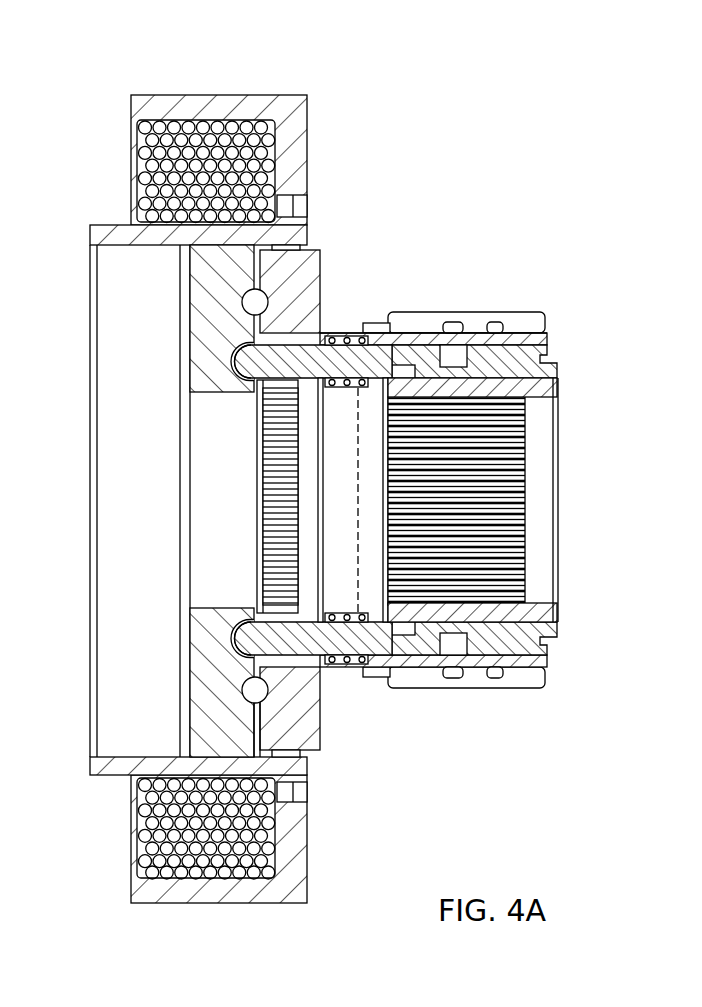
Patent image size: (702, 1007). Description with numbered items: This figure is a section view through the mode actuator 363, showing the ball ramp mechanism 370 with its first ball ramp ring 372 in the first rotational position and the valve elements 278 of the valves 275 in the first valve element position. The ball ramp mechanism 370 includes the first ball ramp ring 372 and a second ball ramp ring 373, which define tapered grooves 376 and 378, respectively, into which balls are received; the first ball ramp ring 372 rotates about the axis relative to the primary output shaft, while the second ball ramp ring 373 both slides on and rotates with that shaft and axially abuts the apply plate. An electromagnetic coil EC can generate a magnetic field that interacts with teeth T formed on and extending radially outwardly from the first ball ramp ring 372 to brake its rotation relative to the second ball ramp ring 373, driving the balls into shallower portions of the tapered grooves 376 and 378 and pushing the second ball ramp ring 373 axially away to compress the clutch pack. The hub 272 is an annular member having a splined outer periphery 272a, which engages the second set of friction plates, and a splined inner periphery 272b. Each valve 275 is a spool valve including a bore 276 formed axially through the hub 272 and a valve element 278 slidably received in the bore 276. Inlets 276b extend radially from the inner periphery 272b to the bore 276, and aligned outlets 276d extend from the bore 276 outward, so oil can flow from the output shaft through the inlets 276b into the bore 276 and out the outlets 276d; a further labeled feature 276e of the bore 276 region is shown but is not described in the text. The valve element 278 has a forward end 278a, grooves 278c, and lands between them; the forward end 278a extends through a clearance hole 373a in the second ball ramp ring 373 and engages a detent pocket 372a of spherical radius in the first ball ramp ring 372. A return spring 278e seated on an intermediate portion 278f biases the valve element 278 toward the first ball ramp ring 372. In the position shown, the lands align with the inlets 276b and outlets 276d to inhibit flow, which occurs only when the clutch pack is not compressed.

The mode actuator 363 is at (282, 75).
The electromagnetic coil EC is at (178, 152).
The ball ramp mechanism 370 is at (368, 188).
The clearance hole 373a is at (290, 322).
The drive ring outer surface 276e is at (452, 333).
The outlet 276d is at (494, 332).
The return spring 278e is at (350, 336).
The bore 276 is at (416, 350).
The splined outer periphery 272a is at (525, 322).
The hub 272 is at (558, 340).
The valve 275 is at (575, 350).
The tapered groove 376 is at (243, 312).
The detent pocket 372a is at (250, 360).
The forward end 278a is at (238, 350).
The intermediate portion 278f is at (258, 442).
The valve element 278 is at (355, 362).
The splined inner periphery 272b is at (512, 507).
The inlet 276b is at (510, 440).
The groove 278c is at (497, 648).
The tapered groove 378 is at (243, 690).
The teeth T is at (243, 750).
The first ball ramp ring 372 is at (203, 743).
The second ball ramp ring 373 is at (312, 742).